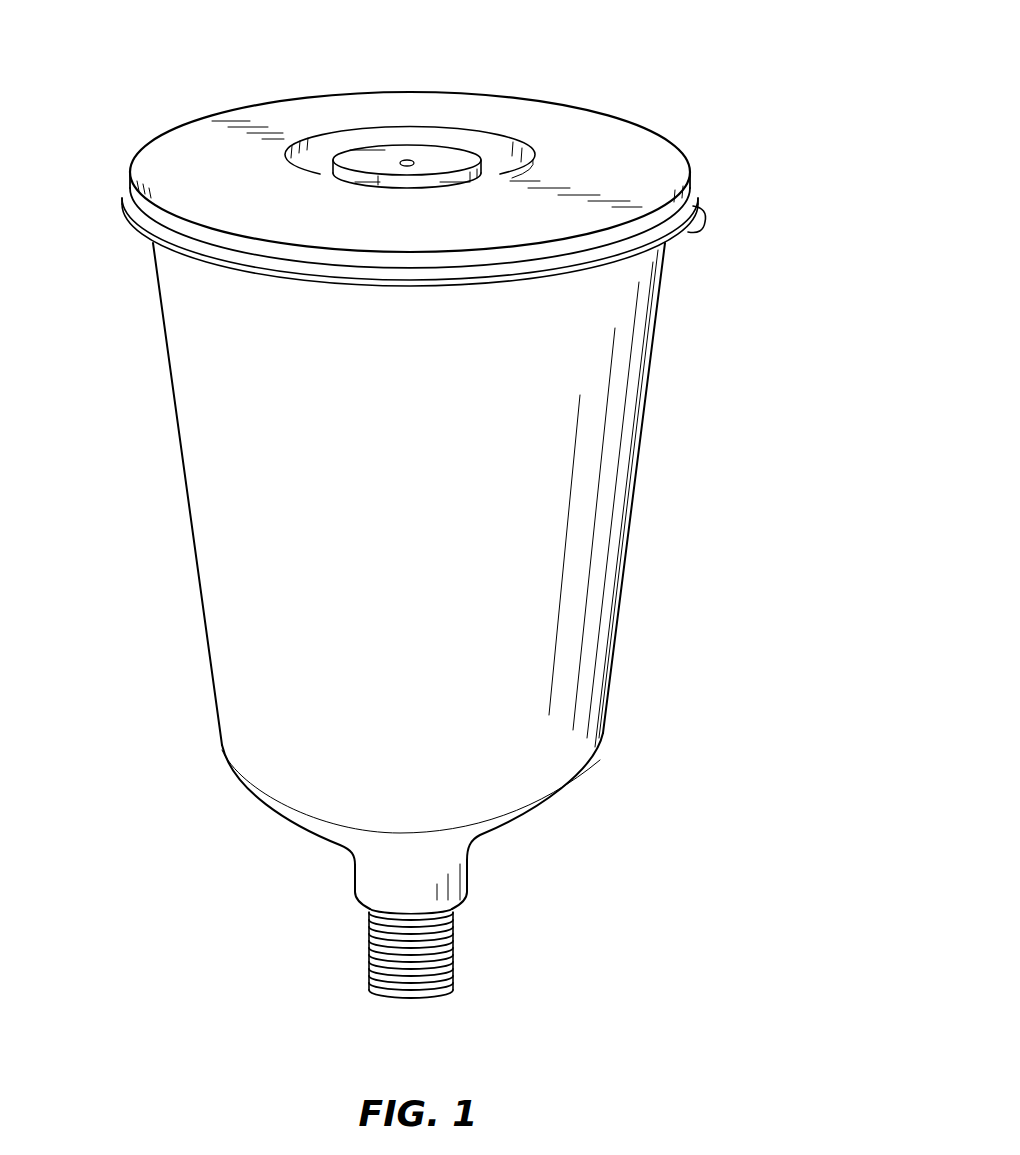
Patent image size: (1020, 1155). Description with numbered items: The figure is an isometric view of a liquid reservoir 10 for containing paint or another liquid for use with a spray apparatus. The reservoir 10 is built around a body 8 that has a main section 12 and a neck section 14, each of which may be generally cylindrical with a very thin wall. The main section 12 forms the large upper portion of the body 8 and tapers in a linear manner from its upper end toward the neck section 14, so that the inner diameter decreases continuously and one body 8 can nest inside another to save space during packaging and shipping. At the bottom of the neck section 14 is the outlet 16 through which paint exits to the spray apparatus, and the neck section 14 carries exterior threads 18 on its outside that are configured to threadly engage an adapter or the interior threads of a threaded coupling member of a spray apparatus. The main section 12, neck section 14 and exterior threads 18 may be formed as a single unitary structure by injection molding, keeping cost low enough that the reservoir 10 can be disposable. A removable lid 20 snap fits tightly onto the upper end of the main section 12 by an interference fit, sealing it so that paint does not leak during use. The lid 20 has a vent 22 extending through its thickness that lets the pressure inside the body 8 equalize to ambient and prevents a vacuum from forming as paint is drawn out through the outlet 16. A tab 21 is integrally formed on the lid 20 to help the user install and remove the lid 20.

The body 8 is at (749, 457).
The liquid reservoir 10 is at (693, 110).
The main section 12 is at (585, 647).
The neck section 14 is at (346, 874).
The outlet 16 is at (424, 997).
The exterior threads 18 is at (369, 945).
The removable lid 20 is at (163, 160).
The tab 21 is at (708, 231).
The vent 22 is at (406, 161).